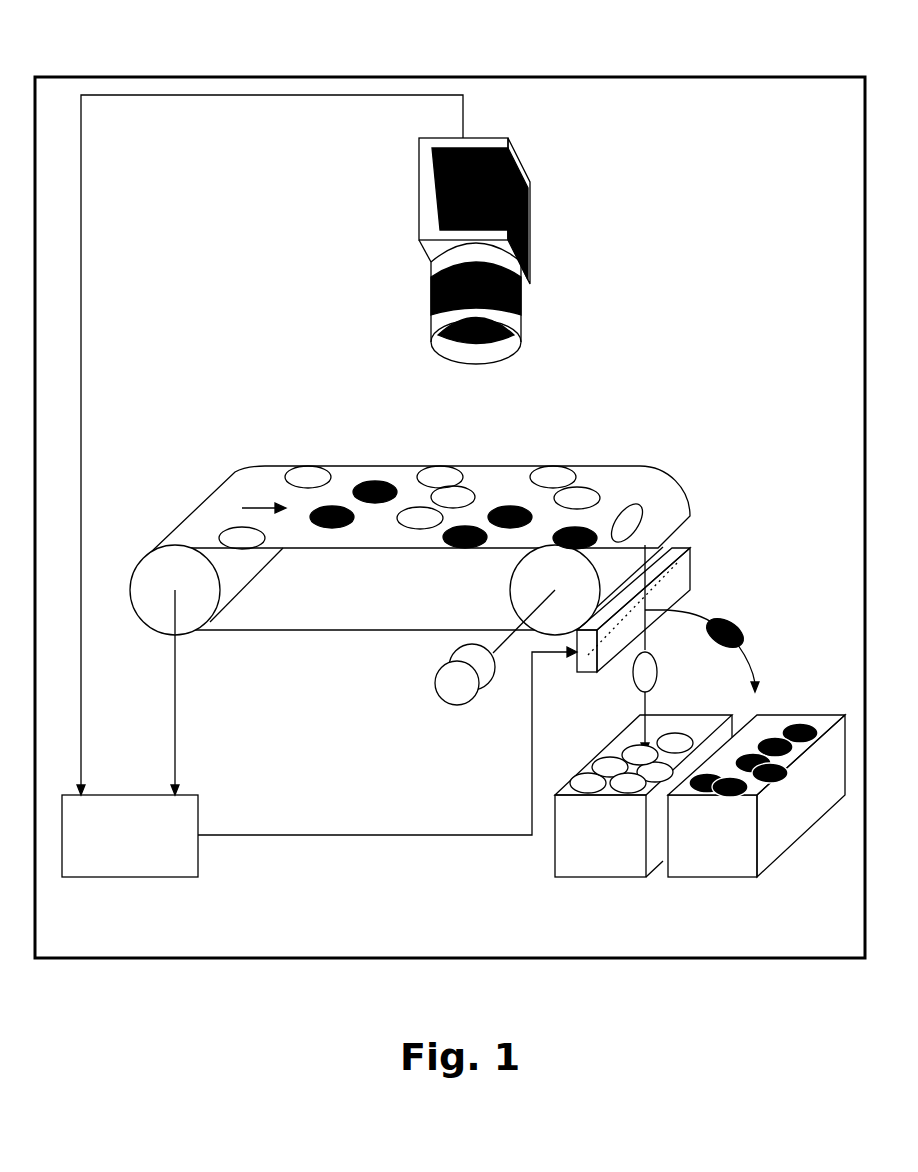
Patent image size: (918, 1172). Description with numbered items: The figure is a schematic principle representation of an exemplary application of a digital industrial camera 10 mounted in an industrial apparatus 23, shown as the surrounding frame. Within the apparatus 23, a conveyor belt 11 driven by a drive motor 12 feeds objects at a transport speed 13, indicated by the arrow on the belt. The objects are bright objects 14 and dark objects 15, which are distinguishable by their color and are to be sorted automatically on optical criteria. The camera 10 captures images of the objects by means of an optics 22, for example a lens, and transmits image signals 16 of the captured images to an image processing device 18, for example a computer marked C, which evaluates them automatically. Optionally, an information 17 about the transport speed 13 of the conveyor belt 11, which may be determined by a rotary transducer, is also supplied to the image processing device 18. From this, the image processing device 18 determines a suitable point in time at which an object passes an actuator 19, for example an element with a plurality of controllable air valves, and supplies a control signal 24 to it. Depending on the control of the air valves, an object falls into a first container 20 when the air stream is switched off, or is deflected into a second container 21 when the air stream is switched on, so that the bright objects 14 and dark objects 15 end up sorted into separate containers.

The digital industrial camera 10 is at (530, 215).
The conveyor belt 11 is at (375, 466).
The drive motor 12 is at (433, 688).
The transport speed 13 is at (262, 505).
The bright object 14 is at (473, 491).
The dark object 15 is at (382, 483).
The image signals 16 is at (81, 197).
The information about transport speed 17 is at (175, 710).
The image processing device 18 is at (198, 855).
The actuator 19 is at (690, 565).
The first container 20 is at (600, 877).
The second container 21 is at (713, 877).
The optics 22 is at (521, 297).
The industrial apparatus 23 is at (728, 77).
The control signal 24 is at (333, 835).